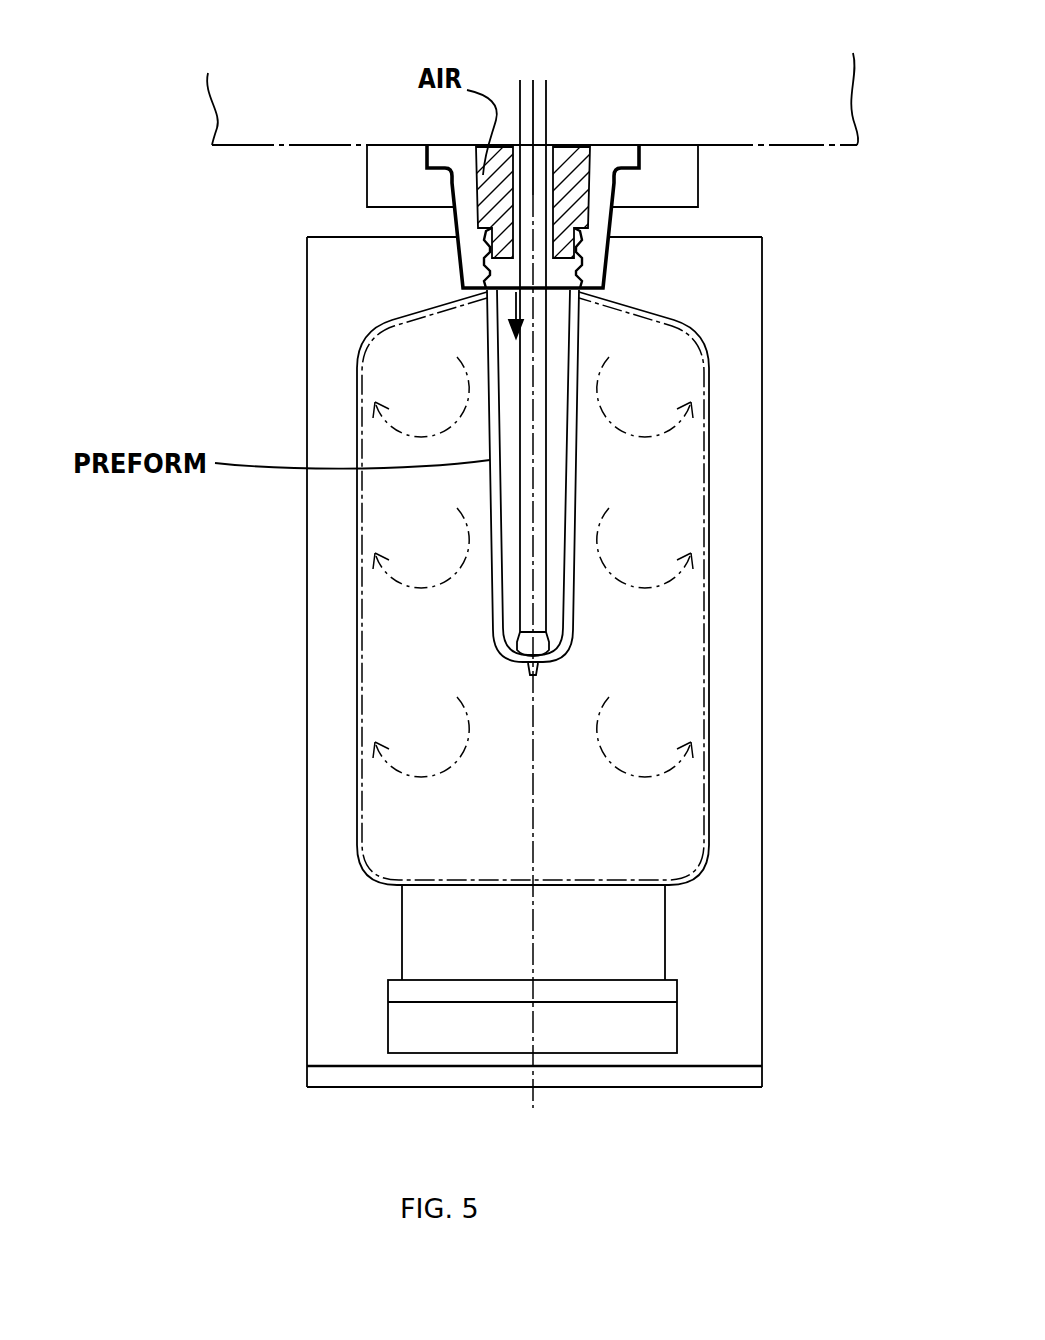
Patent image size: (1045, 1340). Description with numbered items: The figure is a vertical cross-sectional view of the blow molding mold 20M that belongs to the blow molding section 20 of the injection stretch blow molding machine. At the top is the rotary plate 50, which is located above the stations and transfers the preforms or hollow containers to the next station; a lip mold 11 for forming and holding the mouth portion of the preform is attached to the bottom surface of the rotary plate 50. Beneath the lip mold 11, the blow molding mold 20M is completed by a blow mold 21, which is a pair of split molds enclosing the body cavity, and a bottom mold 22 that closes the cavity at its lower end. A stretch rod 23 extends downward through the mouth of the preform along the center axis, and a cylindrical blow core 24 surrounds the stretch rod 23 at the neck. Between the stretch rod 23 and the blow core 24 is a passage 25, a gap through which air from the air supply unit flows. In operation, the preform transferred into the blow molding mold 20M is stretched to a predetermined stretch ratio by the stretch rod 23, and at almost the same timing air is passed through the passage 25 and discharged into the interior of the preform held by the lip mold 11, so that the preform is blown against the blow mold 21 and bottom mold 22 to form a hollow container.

The lip mold 11 is at (613, 222).
The blow molding section 20 is at (892, 604).
The blow molding mold 20M is at (262, 706).
The blow mold 21 is at (343, 988).
The bottom mold 22 is at (610, 932).
The stretch rod 23 is at (540, 447).
The blow core 24 is at (483, 258).
The passage 25 is at (516, 170).
The rotary plate 50 is at (278, 147).